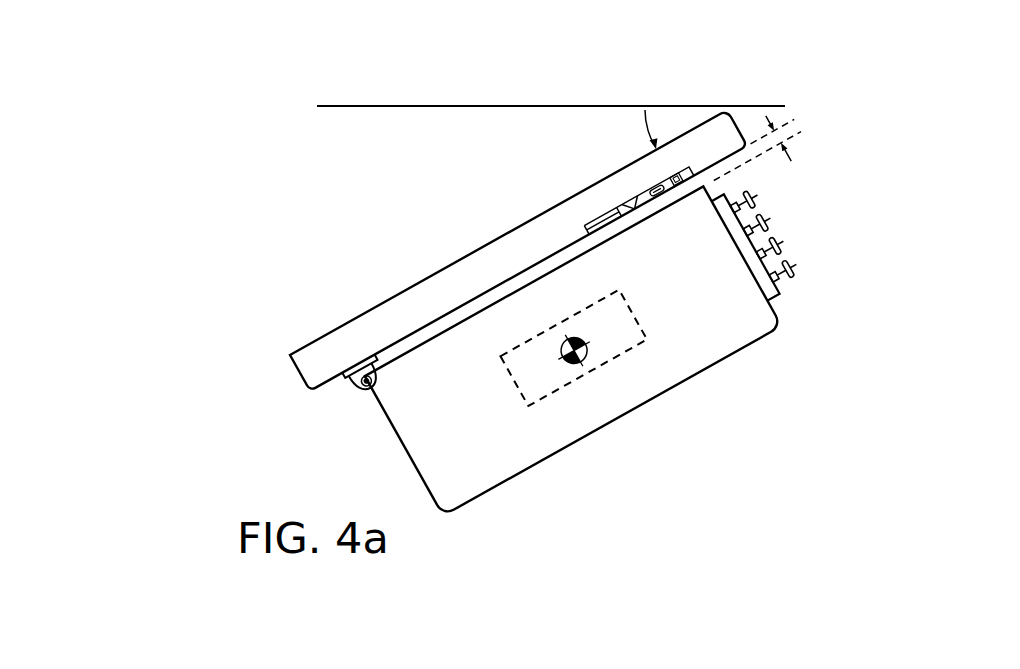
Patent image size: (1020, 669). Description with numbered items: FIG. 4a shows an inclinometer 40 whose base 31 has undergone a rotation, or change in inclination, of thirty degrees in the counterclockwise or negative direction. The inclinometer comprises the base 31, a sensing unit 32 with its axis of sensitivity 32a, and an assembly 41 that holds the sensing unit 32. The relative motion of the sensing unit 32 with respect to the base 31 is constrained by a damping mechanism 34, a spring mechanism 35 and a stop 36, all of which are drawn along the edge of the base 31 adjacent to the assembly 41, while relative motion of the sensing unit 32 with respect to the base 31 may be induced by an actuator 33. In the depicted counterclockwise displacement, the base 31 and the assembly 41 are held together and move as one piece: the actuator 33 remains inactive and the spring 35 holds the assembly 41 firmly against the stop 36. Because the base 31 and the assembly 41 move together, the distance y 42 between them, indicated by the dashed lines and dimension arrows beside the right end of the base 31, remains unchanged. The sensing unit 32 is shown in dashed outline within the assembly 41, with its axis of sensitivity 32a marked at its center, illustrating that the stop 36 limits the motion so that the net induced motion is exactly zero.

The hinge assembly 40 is at (177, 79).
The sensor base 31 is at (341, 345).
The sensing unit 32 is at (630, 343).
The axis of sensitivity 32a is at (566, 368).
The actuator 33 is at (597, 230).
The damping mechanism 34 is at (695, 185).
The spring mechanism 35 is at (668, 217).
The stop 36 is at (634, 207).
The assembly 41 is at (752, 312).
The distance y 42 is at (800, 128).